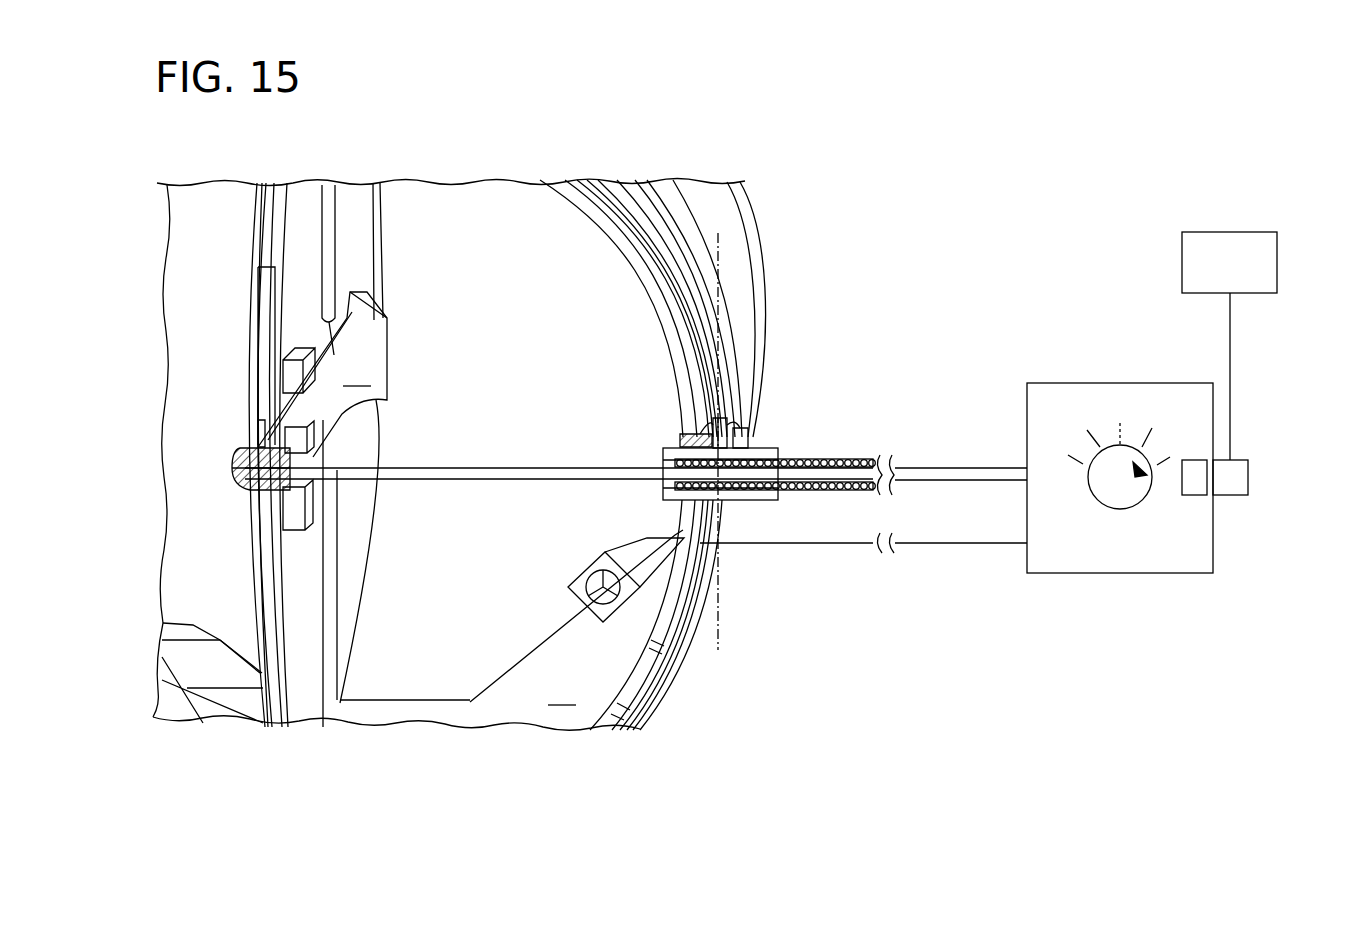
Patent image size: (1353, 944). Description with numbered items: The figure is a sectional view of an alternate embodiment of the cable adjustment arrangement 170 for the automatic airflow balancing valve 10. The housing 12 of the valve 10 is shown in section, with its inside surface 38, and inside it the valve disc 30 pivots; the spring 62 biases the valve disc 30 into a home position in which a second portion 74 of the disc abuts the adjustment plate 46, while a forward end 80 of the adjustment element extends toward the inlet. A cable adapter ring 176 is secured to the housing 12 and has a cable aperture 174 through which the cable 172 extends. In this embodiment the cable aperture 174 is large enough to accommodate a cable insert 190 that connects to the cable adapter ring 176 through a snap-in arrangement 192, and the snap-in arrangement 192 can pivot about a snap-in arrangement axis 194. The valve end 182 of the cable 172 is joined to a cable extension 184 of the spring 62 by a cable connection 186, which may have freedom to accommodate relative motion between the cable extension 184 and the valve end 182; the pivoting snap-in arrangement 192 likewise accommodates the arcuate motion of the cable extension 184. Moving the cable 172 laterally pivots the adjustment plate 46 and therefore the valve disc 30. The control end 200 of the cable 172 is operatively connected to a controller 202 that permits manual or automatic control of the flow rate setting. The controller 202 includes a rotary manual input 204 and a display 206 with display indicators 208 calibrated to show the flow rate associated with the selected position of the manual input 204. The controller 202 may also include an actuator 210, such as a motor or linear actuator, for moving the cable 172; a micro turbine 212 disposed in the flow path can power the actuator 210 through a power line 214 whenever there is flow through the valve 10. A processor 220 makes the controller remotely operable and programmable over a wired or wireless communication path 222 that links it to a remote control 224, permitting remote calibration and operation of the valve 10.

The automatic airflow balancing valve 10 is at (839, 203).
The housing 12 is at (765, 310).
The valve disc 30 is at (248, 323).
The inside surface 38 is at (576, 617).
The adjustment plate 46 is at (300, 248).
The spring 62 is at (322, 411).
The second portion 74 is at (246, 356).
The forward end 80 is at (190, 630).
The cable adjustment arrangement 170 is at (877, 609).
The cable 172 is at (432, 464).
The cable aperture 174 is at (752, 447).
The cable adapter ring 176 is at (663, 690).
The valve end 182 is at (262, 468).
The cable extension 184 is at (273, 437).
The cable connection 186 is at (236, 503).
The cable insert 190 is at (763, 503).
The snap-in arrangement 192 is at (661, 438).
The snap-in arrangement axis 194 is at (723, 621).
The control end 200 is at (1016, 500).
The controller 202 is at (1100, 575).
The manual input 204 is at (1118, 509).
The display 206 is at (1103, 383).
The display indicators 208 is at (1127, 402).
The actuator 210 is at (1193, 497).
The micro turbine 212 is at (580, 573).
The power line 214 is at (637, 557).
The processor 220 is at (1235, 497).
The communication path 222 is at (1232, 372).
The remote control 224 is at (1278, 262).